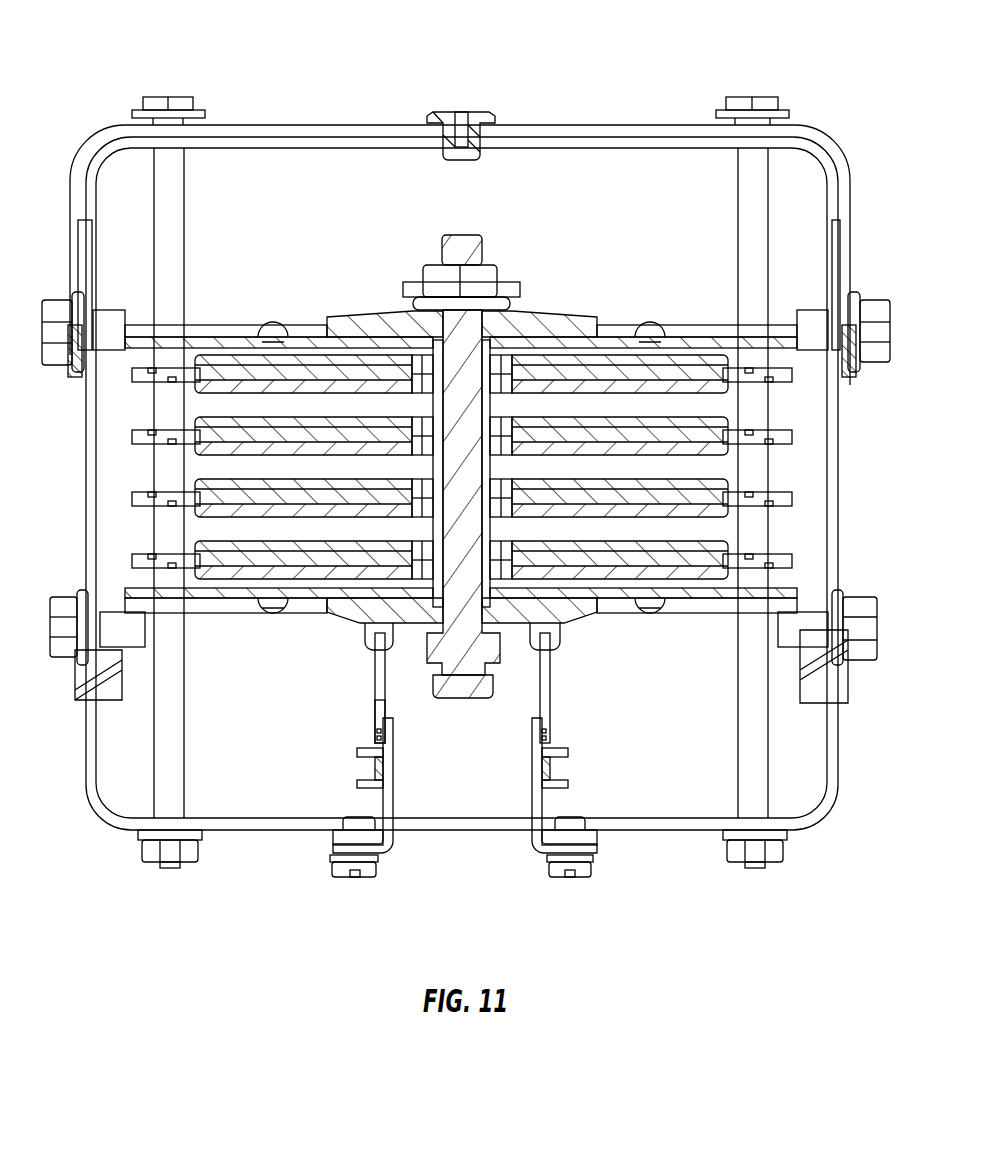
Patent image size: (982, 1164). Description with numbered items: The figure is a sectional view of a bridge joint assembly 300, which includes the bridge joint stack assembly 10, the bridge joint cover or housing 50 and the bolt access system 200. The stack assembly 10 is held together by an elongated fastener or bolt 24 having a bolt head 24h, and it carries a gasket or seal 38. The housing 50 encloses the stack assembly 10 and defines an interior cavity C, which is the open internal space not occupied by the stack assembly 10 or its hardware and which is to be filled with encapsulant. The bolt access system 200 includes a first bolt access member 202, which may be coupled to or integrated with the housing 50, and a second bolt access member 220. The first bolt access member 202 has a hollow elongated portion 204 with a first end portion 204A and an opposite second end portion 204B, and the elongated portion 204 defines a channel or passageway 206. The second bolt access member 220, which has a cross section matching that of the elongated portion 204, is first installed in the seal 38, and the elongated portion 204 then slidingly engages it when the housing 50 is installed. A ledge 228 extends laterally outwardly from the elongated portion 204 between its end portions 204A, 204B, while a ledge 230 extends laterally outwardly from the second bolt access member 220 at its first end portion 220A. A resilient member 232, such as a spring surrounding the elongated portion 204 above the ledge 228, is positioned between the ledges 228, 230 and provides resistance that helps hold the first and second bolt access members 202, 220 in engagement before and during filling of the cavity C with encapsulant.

The bridge joint assembly 300 is at (690, 76).
The bridge joint cover or housing 50 is at (364, 117).
The bridge joint stack assembly 10 is at (460, 360).
The interior cavity C is at (521, 202).
The bolt 24 is at (506, 653).
The bolt head 24h is at (506, 687).
The gasket or seal 38 is at (567, 635).
The second bolt access member 220 is at (350, 650).
The first end portion 220A is at (363, 733).
The ledge 230 is at (355, 752).
The resilient member 232 is at (360, 762).
The ledge 228 is at (355, 786).
The elongated portion 204 is at (357, 801).
The first end portion 204A is at (400, 826).
The second end portion 204B is at (403, 743).
The channel or passageway 206 is at (448, 796).
The bolt access system 200 is at (568, 803).
The first bolt access member 202 is at (578, 784).